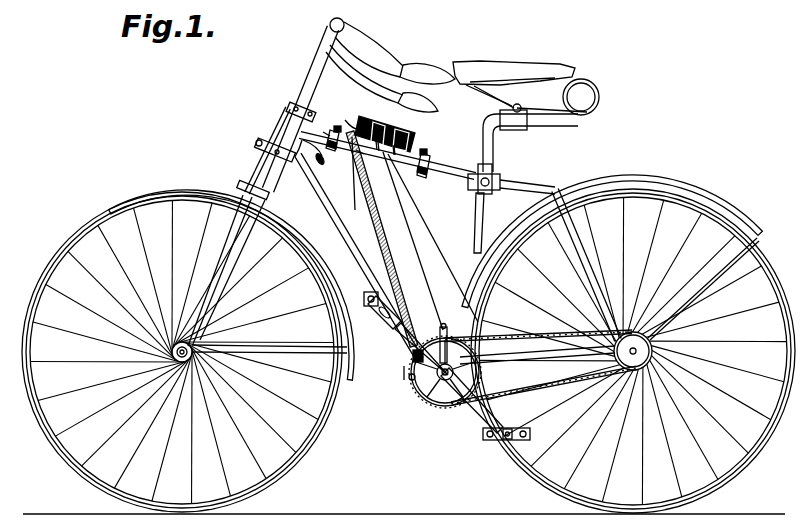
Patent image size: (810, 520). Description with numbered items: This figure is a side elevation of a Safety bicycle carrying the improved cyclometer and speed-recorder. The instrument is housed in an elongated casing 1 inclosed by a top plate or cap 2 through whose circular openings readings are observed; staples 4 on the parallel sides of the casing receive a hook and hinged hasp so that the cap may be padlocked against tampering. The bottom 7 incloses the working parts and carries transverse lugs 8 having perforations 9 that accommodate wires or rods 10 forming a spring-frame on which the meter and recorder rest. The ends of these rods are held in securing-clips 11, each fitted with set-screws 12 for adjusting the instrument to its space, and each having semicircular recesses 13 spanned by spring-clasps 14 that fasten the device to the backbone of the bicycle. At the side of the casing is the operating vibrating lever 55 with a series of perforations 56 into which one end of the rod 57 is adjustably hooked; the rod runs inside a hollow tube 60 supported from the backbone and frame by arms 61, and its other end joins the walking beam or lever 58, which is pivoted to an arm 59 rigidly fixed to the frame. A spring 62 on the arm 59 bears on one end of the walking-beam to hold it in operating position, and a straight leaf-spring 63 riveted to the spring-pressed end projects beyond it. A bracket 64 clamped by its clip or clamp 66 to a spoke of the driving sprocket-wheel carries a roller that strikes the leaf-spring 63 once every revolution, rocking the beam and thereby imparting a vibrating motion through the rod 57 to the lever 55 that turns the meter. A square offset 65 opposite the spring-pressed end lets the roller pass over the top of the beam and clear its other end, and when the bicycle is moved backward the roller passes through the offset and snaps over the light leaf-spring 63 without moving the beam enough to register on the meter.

The elongated casing 1 is at (416, 145).
The top plate or cap 2 is at (398, 130).
The staples 4 is at (358, 152).
The bottom 7 is at (357, 160).
The transverse lugs 8 is at (378, 152).
The perforations 9 is at (394, 157).
The wires or rods 10 is at (412, 155).
The securing-clips 11 is at (334, 130).
The set-screws 12 is at (340, 127).
The semicircular recesses 13 is at (328, 134).
The spring-clasps 14 is at (329, 151).
The operating vibrating lever 55 is at (366, 121).
The perforations 56 is at (351, 125).
The rod 57 is at (320, 164).
The walking beam or lever 58 is at (409, 379).
The arm 59 is at (472, 327).
The hollow tube 60 is at (379, 220).
The arms 61 is at (437, 318).
The spring 62 is at (483, 346).
The straight leaf-spring 63 is at (476, 372).
The bracket 64 is at (428, 398).
The square offset 65 is at (412, 355).
The clip or clamp 66 is at (485, 433).